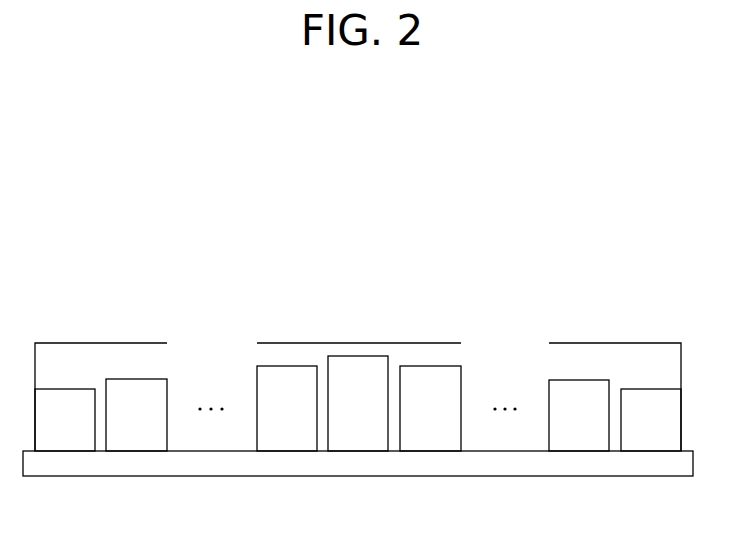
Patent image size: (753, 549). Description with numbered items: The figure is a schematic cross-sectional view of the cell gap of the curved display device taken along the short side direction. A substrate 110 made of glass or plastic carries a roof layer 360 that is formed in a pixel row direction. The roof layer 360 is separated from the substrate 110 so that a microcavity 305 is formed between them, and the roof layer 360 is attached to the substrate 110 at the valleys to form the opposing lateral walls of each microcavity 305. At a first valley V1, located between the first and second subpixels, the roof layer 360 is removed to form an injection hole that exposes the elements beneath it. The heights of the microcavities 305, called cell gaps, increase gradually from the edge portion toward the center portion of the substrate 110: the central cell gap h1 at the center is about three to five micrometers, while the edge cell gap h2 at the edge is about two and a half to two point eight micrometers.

The substrate 110 is at (137, 464).
The roof layer 360 is at (131, 357).
The microcavity 305 is at (428, 383).
The first valley V1 is at (100, 405).
The central cell gap h1 is at (347, 363).
The edge cell gap h2 is at (52, 395).